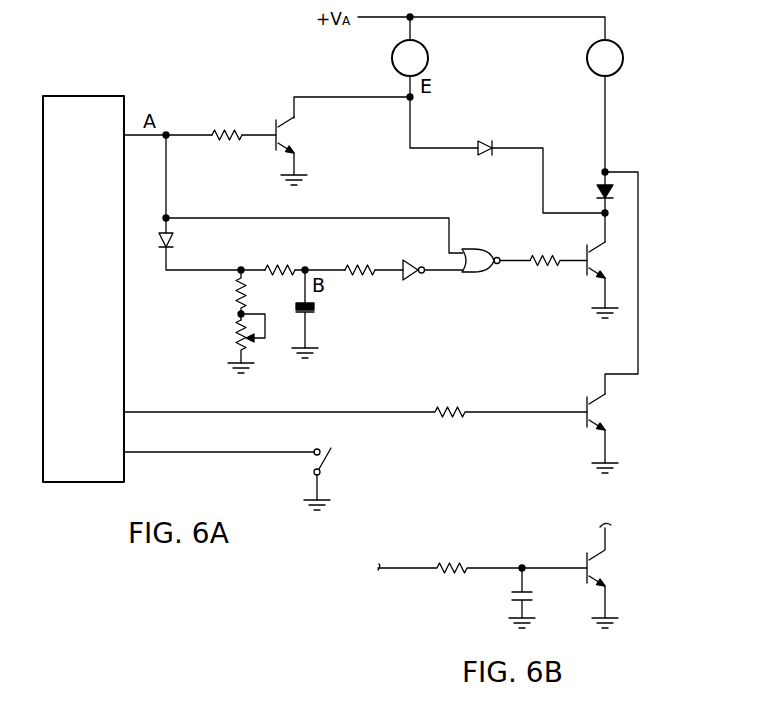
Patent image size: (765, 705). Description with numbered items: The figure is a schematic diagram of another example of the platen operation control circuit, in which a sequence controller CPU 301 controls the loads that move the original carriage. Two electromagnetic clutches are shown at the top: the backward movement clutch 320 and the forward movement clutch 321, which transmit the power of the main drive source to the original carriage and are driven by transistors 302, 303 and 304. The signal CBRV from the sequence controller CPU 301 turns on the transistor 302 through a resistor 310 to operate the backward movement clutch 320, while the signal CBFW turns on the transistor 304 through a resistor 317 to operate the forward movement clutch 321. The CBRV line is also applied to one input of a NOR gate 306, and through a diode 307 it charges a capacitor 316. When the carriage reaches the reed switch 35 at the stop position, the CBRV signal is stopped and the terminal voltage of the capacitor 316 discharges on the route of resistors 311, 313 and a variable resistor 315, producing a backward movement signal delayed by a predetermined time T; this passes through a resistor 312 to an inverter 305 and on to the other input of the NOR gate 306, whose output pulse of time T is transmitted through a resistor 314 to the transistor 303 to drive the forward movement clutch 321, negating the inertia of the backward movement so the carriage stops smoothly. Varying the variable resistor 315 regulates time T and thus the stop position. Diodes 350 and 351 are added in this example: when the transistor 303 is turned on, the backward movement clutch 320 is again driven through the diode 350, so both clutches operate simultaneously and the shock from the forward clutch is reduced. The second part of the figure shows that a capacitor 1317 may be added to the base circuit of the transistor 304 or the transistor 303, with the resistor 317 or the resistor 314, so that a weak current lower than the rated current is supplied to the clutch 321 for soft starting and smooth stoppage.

In FIG. 6A, the sequence controller CPU 301 is at (95, 96).
In FIG. 6A, the transistor 302 is at (297, 140).
In FIG. 6A, the transistor 303 is at (592, 252).
In FIG. 6B, the transistor 303 is at (602, 572).
In FIG. 6A, the transistor 304 is at (592, 400).
In FIG. 6B, the transistor 304 is at (628, 575).
In FIG. 6A, the inverter 305 is at (411, 280).
In FIG. 6A, the NOR gate 306 is at (472, 273).
In FIG. 6A, the diode 307 is at (176, 241).
In FIG. 6A, the resistor 310 is at (217, 131).
In FIG. 6A, the resistor 311 is at (269, 267).
In FIG. 6A, the resistor 312 is at (348, 266).
In FIG. 6A, the resistor 313 is at (235, 293).
In FIG. 6A, the resistor 314 is at (540, 267).
In FIG. 6B, the resistor 314 is at (446, 562).
In FIG. 6A, the variable resistor 315 is at (233, 340).
In FIG. 6A, the capacitor 316 is at (313, 311).
In FIG. 6A, the resistor 317 is at (446, 406).
In FIG. 6B, the resistor 317 is at (482, 551).
In FIG. 6A, the backward movement clutch 320 is at (428, 54).
In FIG. 6A, the forward movement clutch 321 is at (623, 58).
In FIG. 6A, the diode 350 is at (482, 145).
In FIG. 6A, the diode 351 is at (596, 192).
In FIG. 6A, the reed switch 35 is at (333, 458).
In FIG. 6B, the capacitor 1317 is at (512, 598).